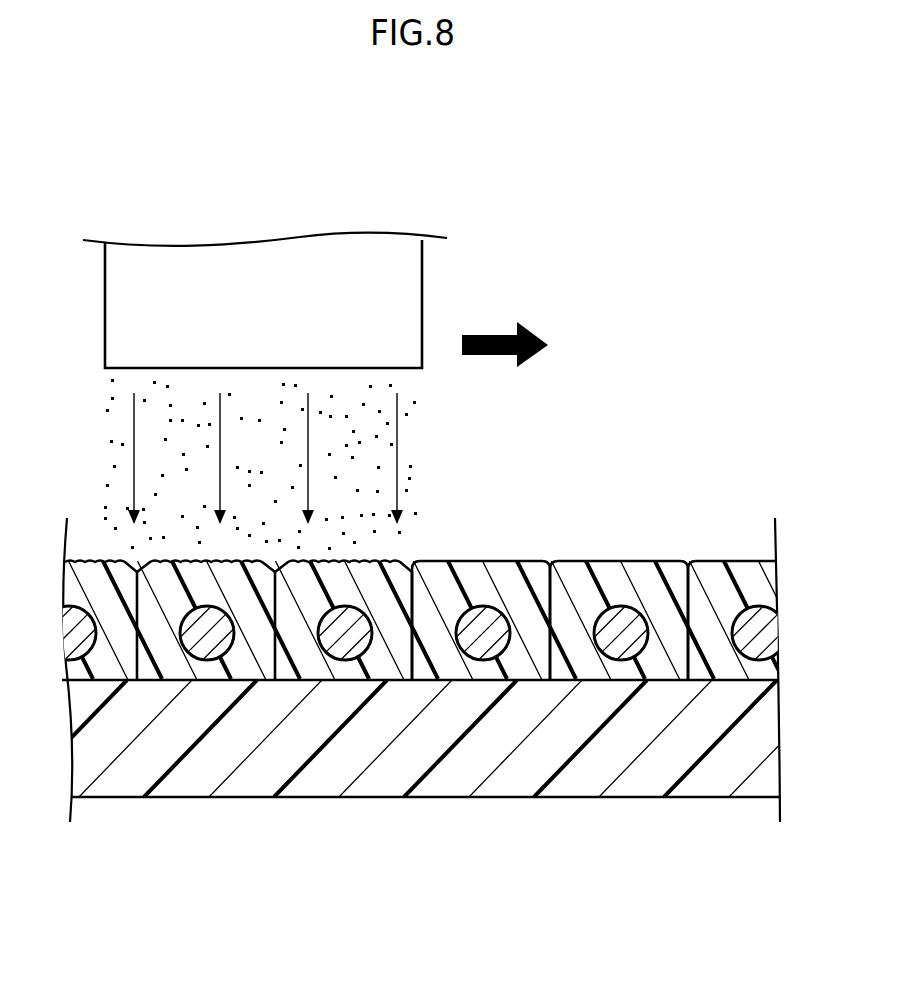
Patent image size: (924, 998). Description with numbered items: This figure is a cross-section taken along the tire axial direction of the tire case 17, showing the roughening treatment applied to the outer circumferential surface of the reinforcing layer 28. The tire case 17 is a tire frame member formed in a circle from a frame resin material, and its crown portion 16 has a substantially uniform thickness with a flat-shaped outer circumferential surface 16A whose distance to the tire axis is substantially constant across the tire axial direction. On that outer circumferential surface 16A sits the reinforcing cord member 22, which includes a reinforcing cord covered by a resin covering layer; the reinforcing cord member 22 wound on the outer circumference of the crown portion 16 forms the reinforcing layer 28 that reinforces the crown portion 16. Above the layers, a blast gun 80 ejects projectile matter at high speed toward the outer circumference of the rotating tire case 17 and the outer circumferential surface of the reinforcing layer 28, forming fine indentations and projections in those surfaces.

The blast gun 80 is at (422, 272).
The reinforcing cord member 22 is at (460, 563).
The reinforcing layer 28 is at (616, 543).
The outer circumferential surface 16A is at (723, 678).
The crown portion 16 is at (462, 690).
The tire case 17 is at (462, 738).